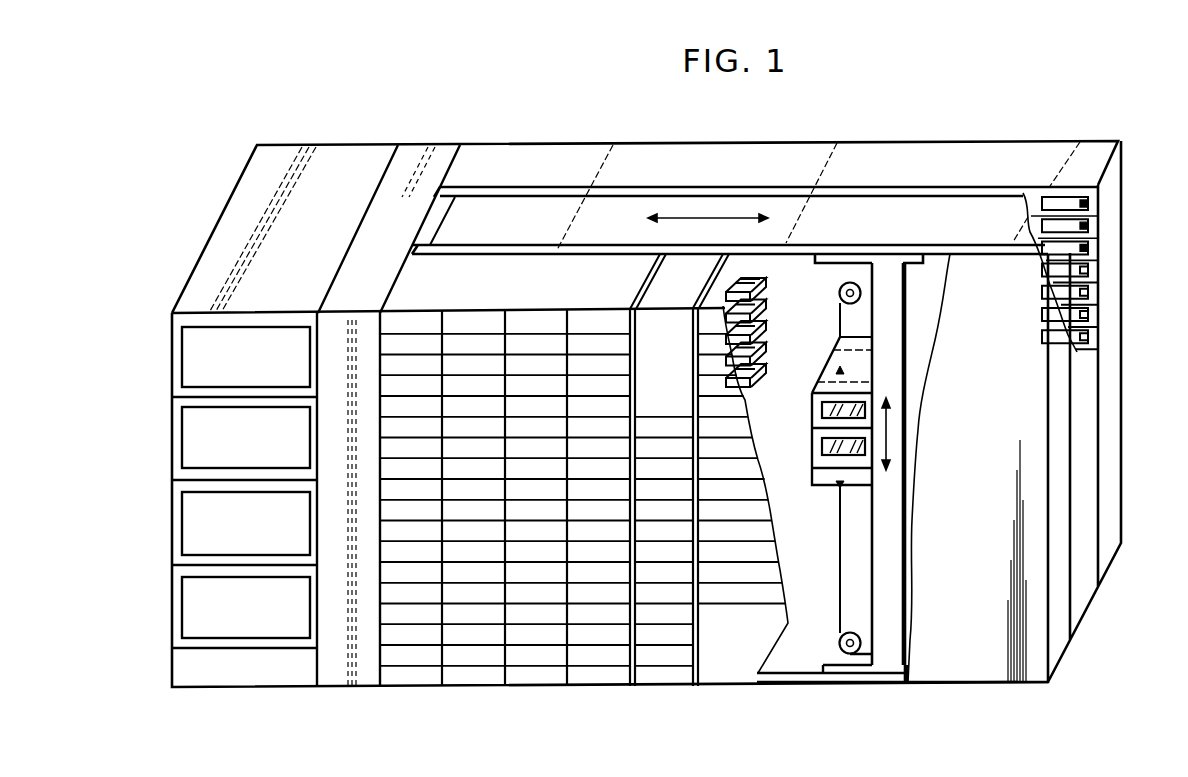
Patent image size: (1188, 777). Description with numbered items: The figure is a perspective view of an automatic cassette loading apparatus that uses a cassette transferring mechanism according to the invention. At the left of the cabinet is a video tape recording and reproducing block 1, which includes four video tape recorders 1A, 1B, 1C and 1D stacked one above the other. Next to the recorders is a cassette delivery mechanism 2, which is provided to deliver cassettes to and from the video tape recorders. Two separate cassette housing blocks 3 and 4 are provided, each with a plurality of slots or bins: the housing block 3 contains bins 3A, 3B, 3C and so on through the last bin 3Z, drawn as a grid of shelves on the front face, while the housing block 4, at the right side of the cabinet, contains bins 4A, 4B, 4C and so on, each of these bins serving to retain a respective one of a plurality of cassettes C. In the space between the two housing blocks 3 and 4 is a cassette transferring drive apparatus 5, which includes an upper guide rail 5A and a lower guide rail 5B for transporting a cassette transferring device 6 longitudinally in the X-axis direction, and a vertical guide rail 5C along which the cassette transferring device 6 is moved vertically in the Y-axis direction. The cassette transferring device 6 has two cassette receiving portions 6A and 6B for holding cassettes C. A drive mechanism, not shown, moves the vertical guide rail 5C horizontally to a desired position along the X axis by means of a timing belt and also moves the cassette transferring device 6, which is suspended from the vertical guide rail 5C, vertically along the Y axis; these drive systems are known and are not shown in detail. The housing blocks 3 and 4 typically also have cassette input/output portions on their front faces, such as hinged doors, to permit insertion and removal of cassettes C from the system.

The video tape recording and reproducing block 1 is at (350, 150).
The video tape recorder 1A is at (182, 369).
The video tape recorder 1B is at (182, 449).
The video tape recorder 1C is at (182, 537).
The video tape recorder 1D is at (182, 620).
The cassette delivery mechanism 2 is at (412, 160).
The cassette housing block 3 is at (477, 263).
The bin 3A is at (401, 320).
The bin 3B is at (413, 342).
The bin 3C is at (420, 367).
The bin 3Z is at (425, 685).
The cassette housing block 4 is at (567, 160).
The bin 4A is at (1088, 208).
The bin 4B is at (1088, 244).
The bin 4C is at (1088, 264).
The cassette transferring drive apparatus 5 is at (759, 210).
The upper guide rail 5A is at (871, 248).
The lower guide rail 5B is at (820, 682).
The vertical guide rail 5C is at (893, 565).
The cassette transferring device 6 is at (823, 490).
The cassette receiving portion 6A is at (865, 410).
The cassette receiving portion 6B is at (865, 450).
The cassette C is at (770, 283).